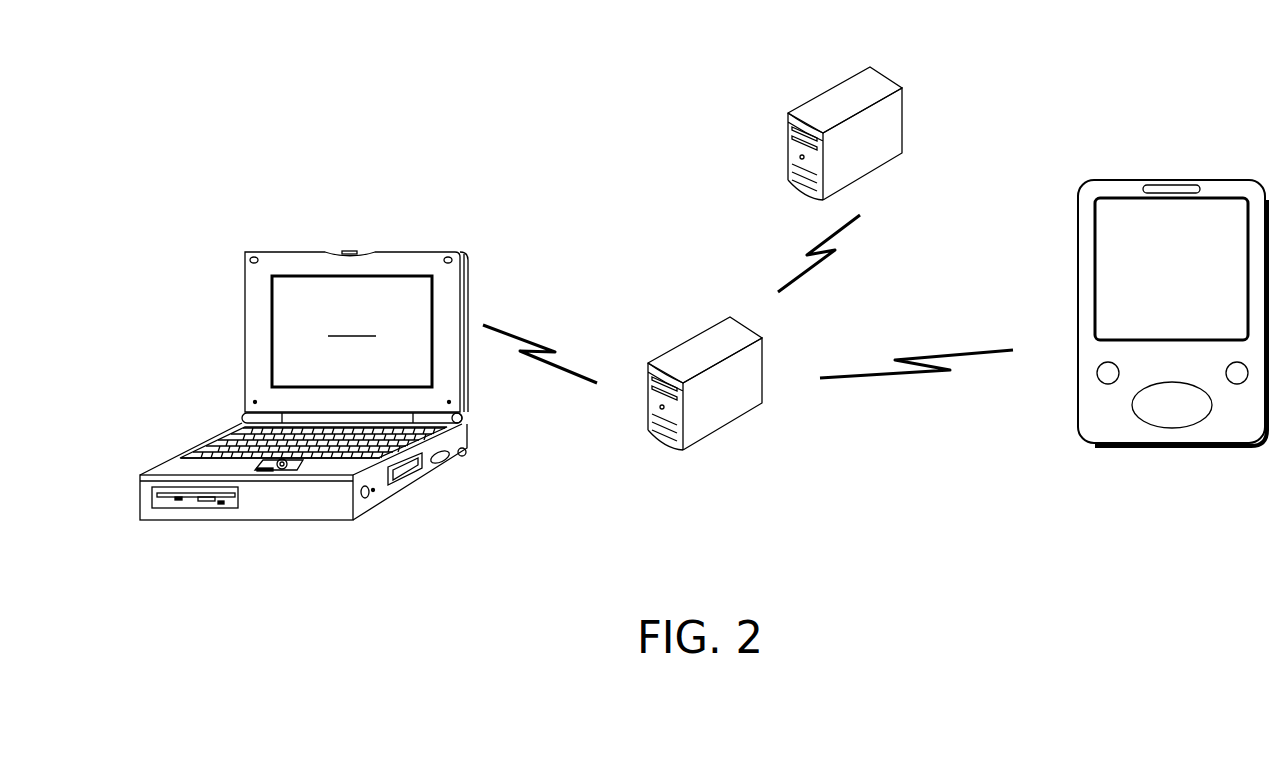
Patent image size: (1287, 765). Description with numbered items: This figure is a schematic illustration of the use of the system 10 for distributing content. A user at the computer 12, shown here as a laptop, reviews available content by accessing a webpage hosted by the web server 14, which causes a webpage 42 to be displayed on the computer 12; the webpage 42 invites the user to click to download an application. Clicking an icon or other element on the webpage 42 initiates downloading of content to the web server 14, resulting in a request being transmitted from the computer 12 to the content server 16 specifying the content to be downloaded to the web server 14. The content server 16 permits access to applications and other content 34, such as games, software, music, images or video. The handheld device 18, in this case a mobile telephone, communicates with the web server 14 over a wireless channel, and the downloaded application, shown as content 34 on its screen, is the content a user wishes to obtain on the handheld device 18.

The system 10 is at (234, 146).
The computer 12 is at (404, 252).
The web server 14 is at (688, 337).
The content server 16 is at (830, 88).
The handheld device 18 is at (1216, 178).
The content 34 is at (1162, 250).
The webpage 42 is at (272, 330).